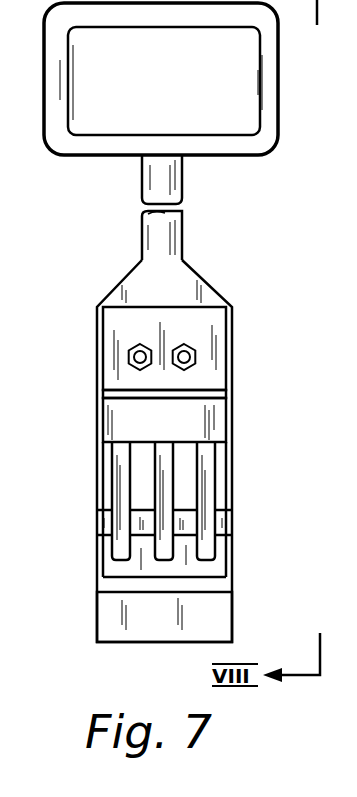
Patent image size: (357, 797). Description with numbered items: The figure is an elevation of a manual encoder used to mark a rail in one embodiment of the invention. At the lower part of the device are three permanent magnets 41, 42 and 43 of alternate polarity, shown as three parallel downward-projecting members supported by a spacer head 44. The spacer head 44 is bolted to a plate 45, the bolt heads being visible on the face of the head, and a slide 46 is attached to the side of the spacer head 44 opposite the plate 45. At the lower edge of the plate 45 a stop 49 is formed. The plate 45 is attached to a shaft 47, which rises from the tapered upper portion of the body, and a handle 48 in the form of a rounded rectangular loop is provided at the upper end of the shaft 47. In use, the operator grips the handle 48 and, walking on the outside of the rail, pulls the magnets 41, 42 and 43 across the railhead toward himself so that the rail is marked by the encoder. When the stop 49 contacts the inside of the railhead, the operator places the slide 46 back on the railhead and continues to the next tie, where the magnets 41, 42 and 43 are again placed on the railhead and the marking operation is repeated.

The permanent magnet 41 is at (118, 547).
The permanent magnet 42 is at (165, 557).
The permanent magnet 43 is at (207, 547).
The spacer head 44 is at (213, 333).
The plate 45 is at (223, 468).
The slide 46 is at (205, 389).
The shaft 47 is at (183, 231).
The handle 48 is at (270, 77).
The stop 49 is at (107, 613).